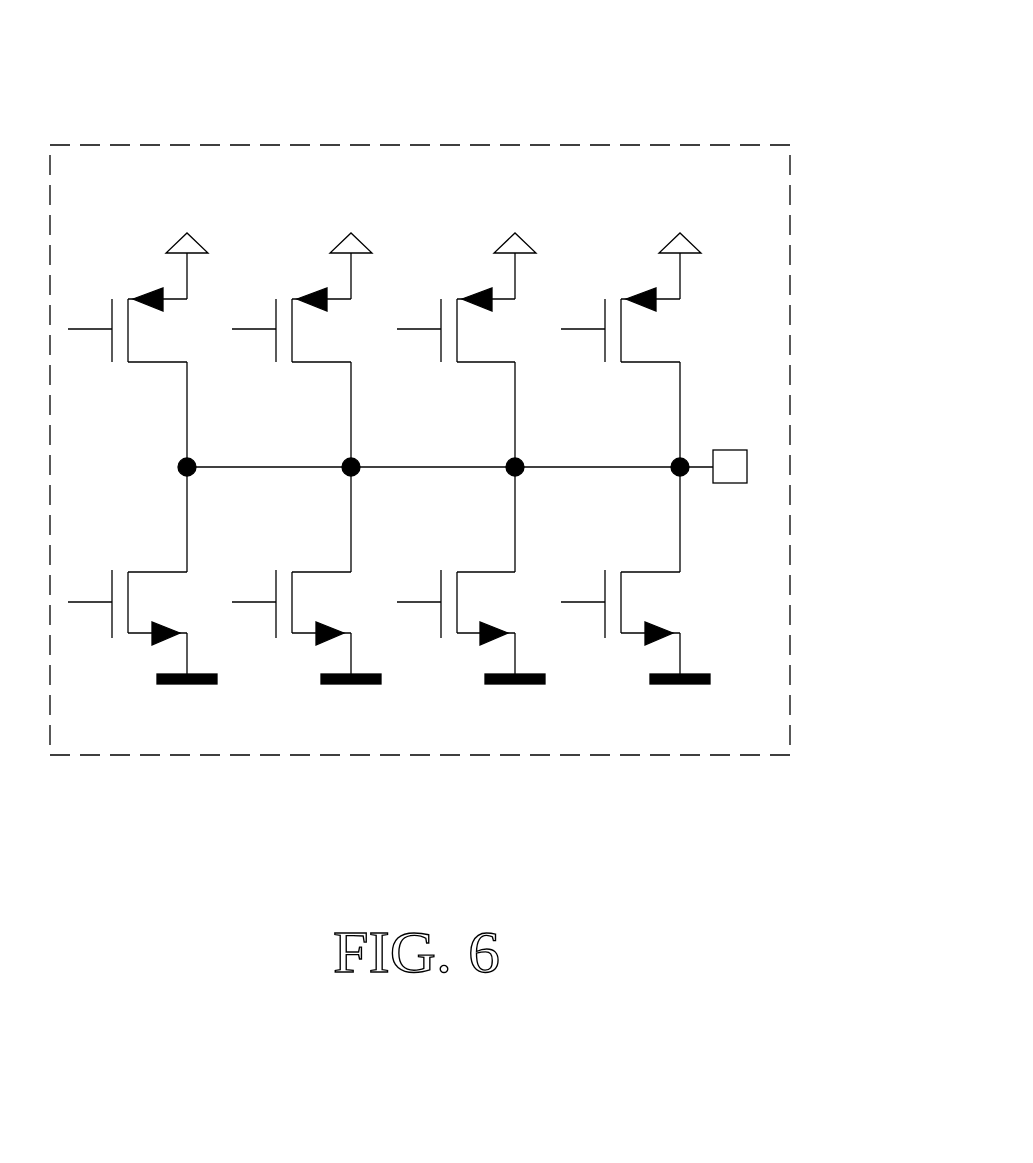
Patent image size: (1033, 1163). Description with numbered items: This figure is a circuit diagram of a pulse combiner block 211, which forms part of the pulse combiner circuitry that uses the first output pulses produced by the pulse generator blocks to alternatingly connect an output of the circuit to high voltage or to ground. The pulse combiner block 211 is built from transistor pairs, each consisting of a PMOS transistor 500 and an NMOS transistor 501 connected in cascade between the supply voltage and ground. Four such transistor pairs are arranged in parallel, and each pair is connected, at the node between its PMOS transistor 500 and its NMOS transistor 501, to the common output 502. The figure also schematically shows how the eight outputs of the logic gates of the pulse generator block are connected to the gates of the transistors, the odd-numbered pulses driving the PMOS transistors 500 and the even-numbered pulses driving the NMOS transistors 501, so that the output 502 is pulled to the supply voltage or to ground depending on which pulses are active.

The pulse combiner block 211 is at (767, 167).
The PMOS transistor 500 is at (123, 275).
The NMOS transistor 501 is at (122, 647).
The output 502 is at (737, 468).